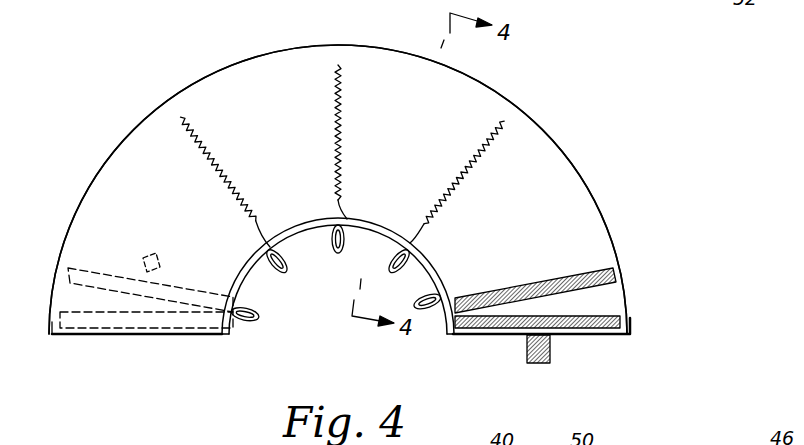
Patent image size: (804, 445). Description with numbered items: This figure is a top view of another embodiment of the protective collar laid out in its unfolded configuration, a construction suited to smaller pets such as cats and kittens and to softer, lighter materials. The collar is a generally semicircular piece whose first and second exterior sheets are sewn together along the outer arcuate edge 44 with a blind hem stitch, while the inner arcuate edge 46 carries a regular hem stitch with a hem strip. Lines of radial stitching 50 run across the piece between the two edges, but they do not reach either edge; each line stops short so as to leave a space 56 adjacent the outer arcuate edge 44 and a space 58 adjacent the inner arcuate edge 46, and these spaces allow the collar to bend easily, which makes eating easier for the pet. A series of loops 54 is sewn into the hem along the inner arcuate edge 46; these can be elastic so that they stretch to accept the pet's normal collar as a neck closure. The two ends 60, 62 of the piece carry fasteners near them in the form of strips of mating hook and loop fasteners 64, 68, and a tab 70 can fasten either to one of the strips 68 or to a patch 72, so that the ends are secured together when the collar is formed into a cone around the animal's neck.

The outer arcuate edge 44 is at (582, 173).
The inner arcuate edge 46 is at (450, 336).
The radial stitching 50 is at (222, 170).
The loops 54 is at (256, 320).
The space 56 is at (180, 117).
The space 58 is at (420, 304).
The end 60 is at (136, 338).
The end 62 is at (583, 337).
The strips of mating hook and loop fasteners 64 is at (618, 277).
The strips of mating hook and loop fasteners 68 is at (57, 262).
The tab 70 is at (527, 350).
The patch 72 is at (139, 262).